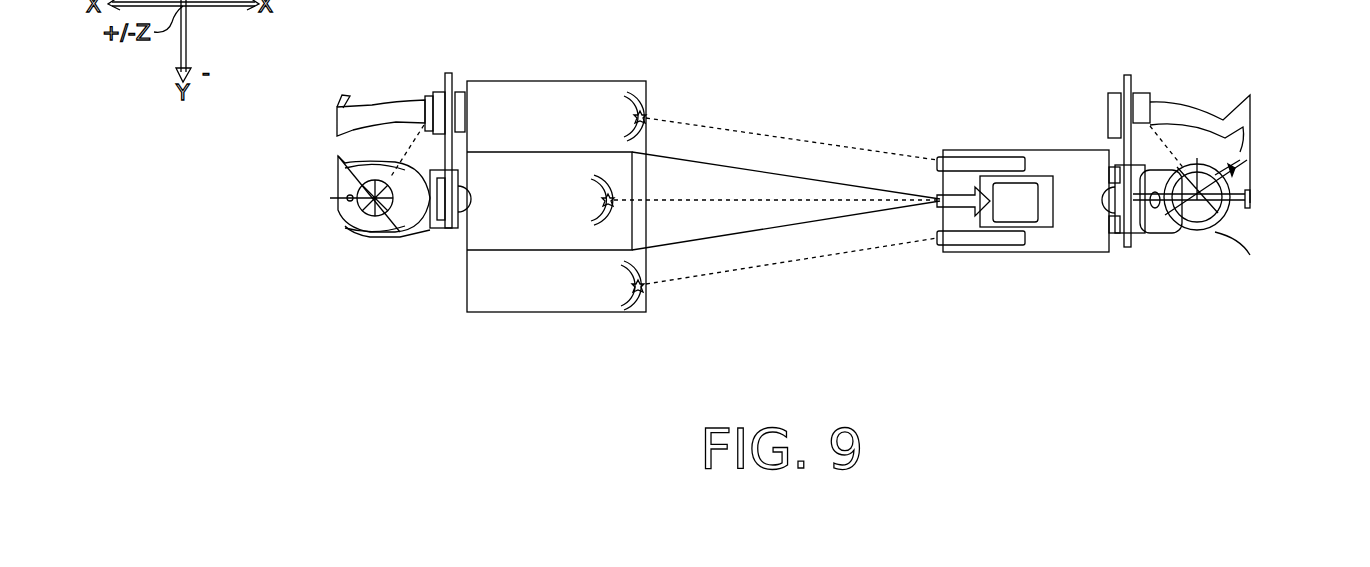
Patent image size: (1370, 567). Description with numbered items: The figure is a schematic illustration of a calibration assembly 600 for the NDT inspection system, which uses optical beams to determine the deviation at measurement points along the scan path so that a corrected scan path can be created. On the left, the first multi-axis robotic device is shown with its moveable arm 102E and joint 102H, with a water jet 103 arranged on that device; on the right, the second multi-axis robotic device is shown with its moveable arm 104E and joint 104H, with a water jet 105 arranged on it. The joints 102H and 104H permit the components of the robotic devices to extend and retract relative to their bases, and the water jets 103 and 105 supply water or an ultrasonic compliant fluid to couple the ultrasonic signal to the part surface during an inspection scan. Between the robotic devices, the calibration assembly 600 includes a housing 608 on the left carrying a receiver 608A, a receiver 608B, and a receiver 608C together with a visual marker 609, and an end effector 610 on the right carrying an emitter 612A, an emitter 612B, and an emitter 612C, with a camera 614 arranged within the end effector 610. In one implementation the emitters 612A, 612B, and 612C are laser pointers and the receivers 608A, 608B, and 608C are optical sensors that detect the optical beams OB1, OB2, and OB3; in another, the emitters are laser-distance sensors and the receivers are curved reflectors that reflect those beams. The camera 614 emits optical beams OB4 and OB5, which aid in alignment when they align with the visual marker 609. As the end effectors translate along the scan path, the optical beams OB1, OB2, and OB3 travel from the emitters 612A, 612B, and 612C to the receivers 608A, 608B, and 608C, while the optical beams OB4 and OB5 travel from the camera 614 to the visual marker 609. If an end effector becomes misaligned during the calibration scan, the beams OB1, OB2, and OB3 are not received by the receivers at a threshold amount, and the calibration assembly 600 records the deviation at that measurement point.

The water jet 103 is at (390, 100).
The joint 102H is at (345, 200).
The moveable arm 102E is at (358, 218).
The water jet 105 is at (1180, 103).
The joint 104H is at (1235, 210).
The moveable arm 104E is at (1222, 228).
The calibration assembly 600 is at (925, 104).
The camera assembly housing 608 is at (498, 80).
The receiver 608A is at (647, 88).
The receiver 608B is at (598, 204).
The receiver 608C is at (623, 298).
The visual marker 609 is at (548, 253).
The end effector 610 is at (952, 150).
The emitter 612A is at (1006, 157).
The emitter 612B is at (985, 246).
The emitter 612C is at (945, 215).
The camera 614 is at (1047, 252).
The optical beam OB1 is at (815, 147).
The optical beam OB2 is at (830, 205).
The optical beam OB3 is at (770, 266).
The optical beam OB4 is at (712, 158).
The optical beam OB5 is at (716, 240).